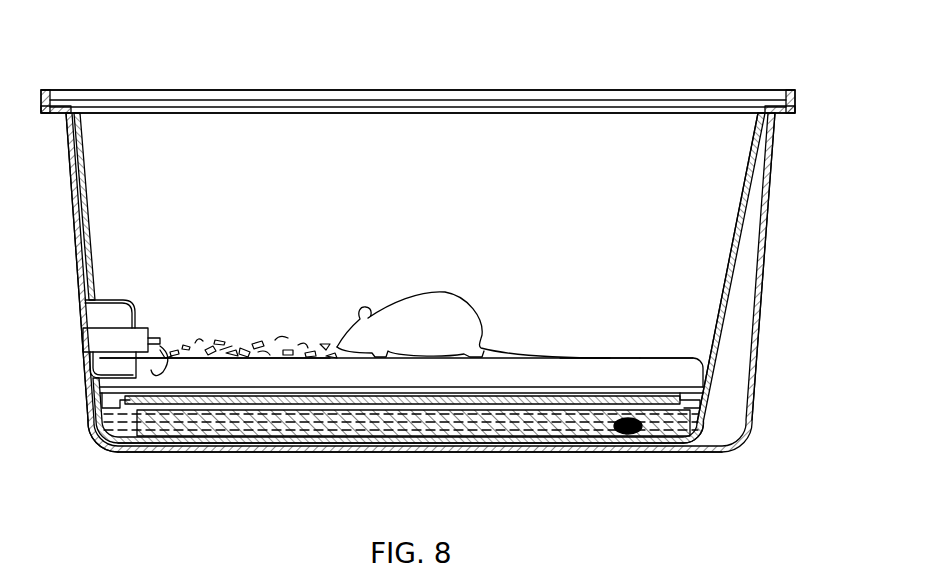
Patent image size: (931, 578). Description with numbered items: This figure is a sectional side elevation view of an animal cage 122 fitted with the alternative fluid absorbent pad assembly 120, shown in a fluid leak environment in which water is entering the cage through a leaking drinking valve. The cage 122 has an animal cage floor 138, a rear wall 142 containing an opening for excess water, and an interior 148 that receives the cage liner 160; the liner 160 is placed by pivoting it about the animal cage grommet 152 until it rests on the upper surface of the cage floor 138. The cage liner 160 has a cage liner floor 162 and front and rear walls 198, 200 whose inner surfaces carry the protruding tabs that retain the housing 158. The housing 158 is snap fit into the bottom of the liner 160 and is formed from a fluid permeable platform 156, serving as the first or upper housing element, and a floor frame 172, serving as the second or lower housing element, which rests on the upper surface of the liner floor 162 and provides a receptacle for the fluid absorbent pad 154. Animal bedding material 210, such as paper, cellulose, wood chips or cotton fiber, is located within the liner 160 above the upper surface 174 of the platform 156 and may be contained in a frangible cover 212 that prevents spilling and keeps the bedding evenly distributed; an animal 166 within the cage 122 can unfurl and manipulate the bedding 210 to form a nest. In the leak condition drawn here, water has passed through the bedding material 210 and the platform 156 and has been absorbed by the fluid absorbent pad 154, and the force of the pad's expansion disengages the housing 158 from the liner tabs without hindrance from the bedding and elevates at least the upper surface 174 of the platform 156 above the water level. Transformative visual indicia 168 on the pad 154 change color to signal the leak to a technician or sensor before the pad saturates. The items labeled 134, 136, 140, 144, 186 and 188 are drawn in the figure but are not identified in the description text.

The fluid absorbent pad assembly 120 is at (171, 75).
The animal cage 122 is at (760, 222).
The feeder 134 is at (146, 334).
The water nipple 136 is at (165, 344).
The animal cage floor 138 is at (355, 458).
The container side wall 140 is at (768, 164).
The rear wall 142 is at (70, 191).
The interior cavity 144 is at (389, 209).
The interior 148 is at (531, 147).
The animal cage grommet 152 is at (120, 300).
The fluid absorbent pad 154 is at (193, 423).
The platform 156 is at (623, 392).
The housing 158 is at (692, 380).
The cage liner 160 is at (735, 251).
The cage liner floor 162 is at (500, 440).
The animal 166 is at (457, 297).
The transformative visual indicia 168 is at (628, 436).
The floor frame 172 is at (90, 420).
The upper surface 174 is at (538, 382).
The liner bottom 186 is at (716, 438).
The liner corner 188 is at (705, 408).
The front wall 198 is at (748, 181).
The rear wall 200 is at (84, 163).
The animal bedding material 210 is at (232, 382).
The frangible cover 212 is at (605, 358).